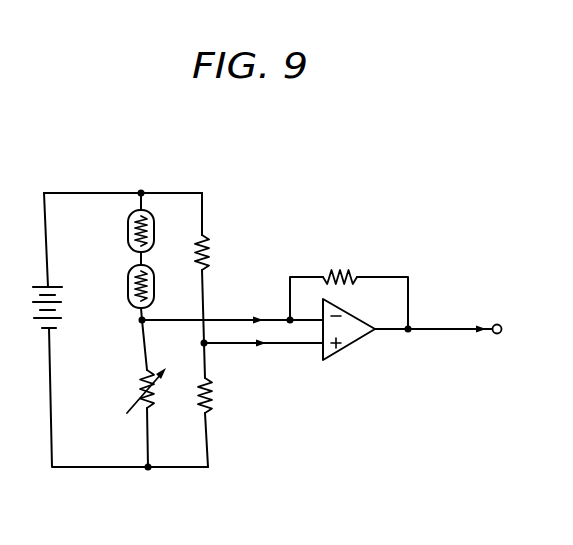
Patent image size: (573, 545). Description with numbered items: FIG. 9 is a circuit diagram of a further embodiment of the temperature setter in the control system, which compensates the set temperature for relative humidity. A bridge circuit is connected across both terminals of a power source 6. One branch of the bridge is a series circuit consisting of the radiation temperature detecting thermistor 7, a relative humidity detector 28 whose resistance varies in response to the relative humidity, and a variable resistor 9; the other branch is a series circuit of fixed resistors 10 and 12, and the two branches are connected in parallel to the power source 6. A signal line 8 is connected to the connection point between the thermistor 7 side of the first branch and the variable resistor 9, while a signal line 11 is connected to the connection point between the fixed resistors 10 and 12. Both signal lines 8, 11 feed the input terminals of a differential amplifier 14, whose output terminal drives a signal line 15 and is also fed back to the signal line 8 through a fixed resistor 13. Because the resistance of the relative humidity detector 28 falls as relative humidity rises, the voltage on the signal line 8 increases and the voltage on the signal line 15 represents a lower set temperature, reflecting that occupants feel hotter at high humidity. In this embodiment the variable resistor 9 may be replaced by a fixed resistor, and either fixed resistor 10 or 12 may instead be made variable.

The power source 6 is at (25, 312).
The radiation temperature detecting thermistor 7 is at (128, 226).
The relative humidity detector 28 is at (128, 290).
The variable resistor 9 is at (143, 388).
The fixed resistor 10 is at (206, 246).
The fixed resistor 12 is at (213, 398).
The signal line 8 is at (236, 318).
The signal line 11 is at (238, 345).
The fixed resistor 13 is at (338, 270).
The differential amplifier 14 is at (350, 342).
The signal line 15 is at (433, 329).